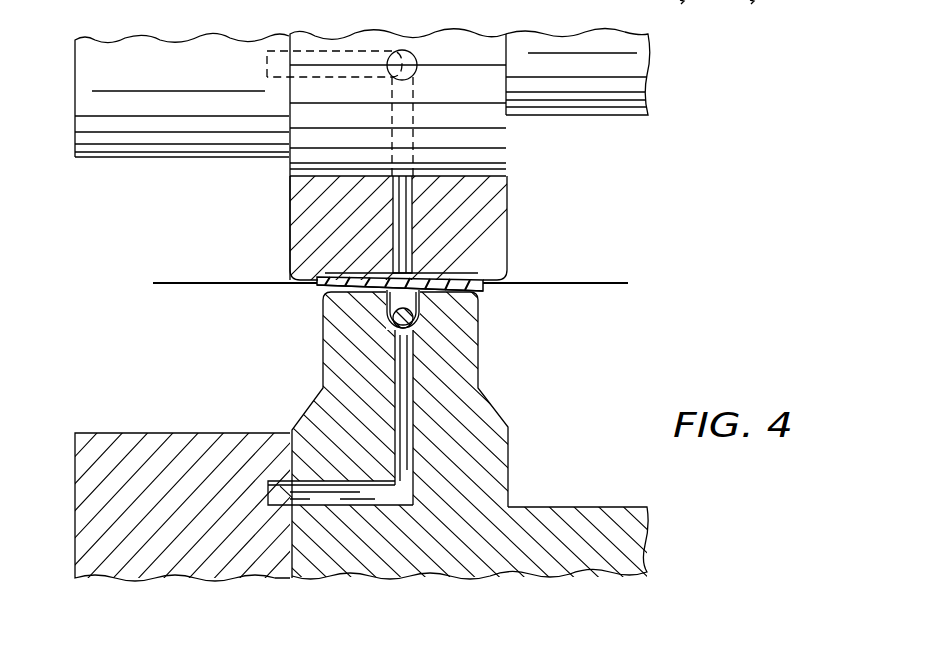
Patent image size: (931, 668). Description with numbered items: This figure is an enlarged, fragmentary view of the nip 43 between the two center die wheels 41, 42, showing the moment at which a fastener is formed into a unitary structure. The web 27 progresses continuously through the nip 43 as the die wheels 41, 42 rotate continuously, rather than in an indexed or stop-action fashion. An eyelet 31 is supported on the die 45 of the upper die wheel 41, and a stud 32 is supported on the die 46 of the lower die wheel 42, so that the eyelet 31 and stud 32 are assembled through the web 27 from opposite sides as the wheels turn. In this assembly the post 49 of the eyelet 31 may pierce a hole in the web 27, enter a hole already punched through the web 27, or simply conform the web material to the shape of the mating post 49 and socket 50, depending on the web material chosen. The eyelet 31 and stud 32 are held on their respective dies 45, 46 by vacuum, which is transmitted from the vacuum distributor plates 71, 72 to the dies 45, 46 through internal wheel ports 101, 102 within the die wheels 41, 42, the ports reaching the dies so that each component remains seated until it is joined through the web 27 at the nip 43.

The web 27 is at (207, 285).
The eyelet 31 is at (322, 278).
The stud 32 is at (327, 288).
The die wheel 41 is at (497, 136).
The die wheel 42 is at (547, 513).
The nip 43 is at (511, 278).
The die 45 is at (503, 205).
The die 46 is at (478, 342).
The post 49 is at (388, 324).
The socket 50 is at (390, 320).
The vacuum distributor plate 71 is at (178, 137).
The vacuum distributor plate 72 is at (162, 408).
The internal wheel port 101 is at (413, 70).
The internal wheel port 102 is at (400, 490).